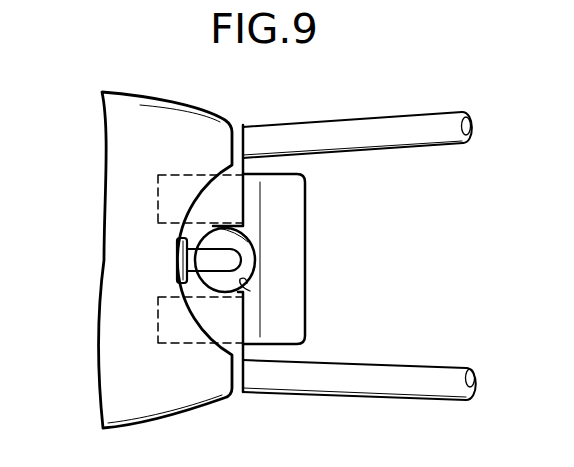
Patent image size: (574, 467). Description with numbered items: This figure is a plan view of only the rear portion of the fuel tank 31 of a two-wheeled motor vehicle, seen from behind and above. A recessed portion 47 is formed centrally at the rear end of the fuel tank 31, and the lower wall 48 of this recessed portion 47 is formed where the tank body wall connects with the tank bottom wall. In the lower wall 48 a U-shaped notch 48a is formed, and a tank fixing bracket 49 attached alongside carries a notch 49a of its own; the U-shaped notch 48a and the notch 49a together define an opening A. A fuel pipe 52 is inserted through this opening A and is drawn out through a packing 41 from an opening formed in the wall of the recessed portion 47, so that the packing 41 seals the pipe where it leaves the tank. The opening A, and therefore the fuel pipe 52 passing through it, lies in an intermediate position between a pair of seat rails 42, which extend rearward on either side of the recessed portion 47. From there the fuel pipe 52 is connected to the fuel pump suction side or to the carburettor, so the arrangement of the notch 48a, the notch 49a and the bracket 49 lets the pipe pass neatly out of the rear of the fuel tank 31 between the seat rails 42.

The fuel tank 31 is at (164, 133).
The packing 41 is at (180, 267).
The seat rails 42 is at (425, 138).
The recessed portion 47 is at (258, 166).
The lower wall 48 is at (210, 202).
The U-shaped notch 48a is at (252, 242).
The tank fixing bracket 49 is at (285, 288).
The notch 49a is at (250, 291).
The fuel pipe 52 is at (207, 270).
The opening A is at (248, 262).